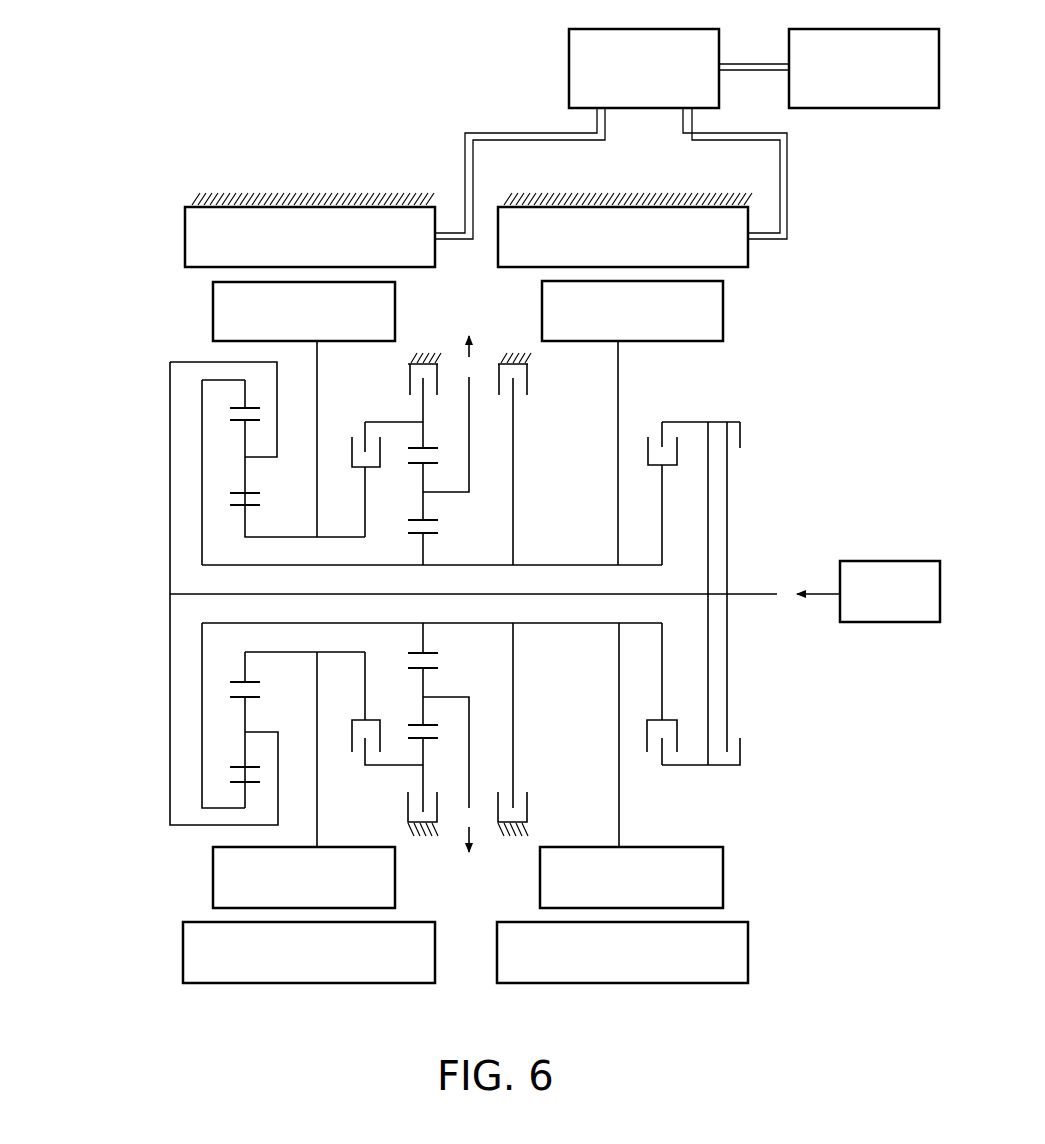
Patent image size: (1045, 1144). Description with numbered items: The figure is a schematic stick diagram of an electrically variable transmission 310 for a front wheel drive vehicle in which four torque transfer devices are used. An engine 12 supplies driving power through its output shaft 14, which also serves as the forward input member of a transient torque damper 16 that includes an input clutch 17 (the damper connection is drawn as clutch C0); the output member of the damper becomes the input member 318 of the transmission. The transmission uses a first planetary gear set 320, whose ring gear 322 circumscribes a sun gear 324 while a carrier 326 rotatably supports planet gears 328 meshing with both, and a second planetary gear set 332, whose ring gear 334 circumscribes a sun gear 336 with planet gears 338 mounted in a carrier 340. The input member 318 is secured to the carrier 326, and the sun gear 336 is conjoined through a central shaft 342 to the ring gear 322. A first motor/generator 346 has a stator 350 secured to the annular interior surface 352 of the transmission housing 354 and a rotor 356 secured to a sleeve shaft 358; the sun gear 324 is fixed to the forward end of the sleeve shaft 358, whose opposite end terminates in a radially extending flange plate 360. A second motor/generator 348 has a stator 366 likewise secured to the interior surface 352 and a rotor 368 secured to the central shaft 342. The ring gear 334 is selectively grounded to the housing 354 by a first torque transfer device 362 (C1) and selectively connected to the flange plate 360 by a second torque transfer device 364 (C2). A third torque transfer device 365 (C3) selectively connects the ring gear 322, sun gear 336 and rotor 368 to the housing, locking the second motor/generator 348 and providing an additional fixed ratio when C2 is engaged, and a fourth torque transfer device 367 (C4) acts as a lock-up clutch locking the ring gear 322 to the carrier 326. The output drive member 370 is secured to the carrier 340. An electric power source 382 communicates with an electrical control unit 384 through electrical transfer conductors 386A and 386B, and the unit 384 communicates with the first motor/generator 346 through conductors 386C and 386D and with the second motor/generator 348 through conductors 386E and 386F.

The engine 12 is at (885, 623).
The output shaft 14 is at (752, 592).
The transient torque damper 16 is at (755, 423).
The input clutch 17 is at (745, 770).
The electrically variable transmission 310 is at (105, 398).
The input member 318 is at (683, 594).
The first planetary gear set 320 is at (226, 393).
The ring gear 322 is at (253, 407).
The sun gear 324 is at (253, 508).
The carrier 326 is at (220, 468).
The planet gears 328 is at (255, 490).
The second planetary gear set 332 is at (408, 418).
The ring gear 334 is at (428, 448).
The sun gear 336 is at (428, 537).
The planet gears 338 is at (415, 463).
The carrier 340 is at (439, 500).
The central shaft 342 is at (228, 565).
The first motor/generator 346 is at (156, 263).
The second motor/generator 348 is at (765, 275).
The stator 350 is at (185, 219).
The interior surface 352 is at (213, 215).
The transmission housing 354 is at (422, 350).
The rotor 356 is at (212, 312).
The sleeve shaft 358 is at (290, 538).
The flange plate 360 is at (368, 512).
The first torque transfer device 362 is at (400, 372).
The second torque transfer device 364 is at (345, 436).
The third torque transfer device 365 is at (535, 407).
The stator 366 is at (498, 250).
The fourth torque transfer device 367 is at (646, 428).
The rotor 368 is at (725, 320).
The output drive member 370 is at (475, 845).
The electric power source 382 is at (878, 110).
The electrical control unit 384 is at (569, 62).
The electrical transfer conductor 386A is at (758, 62).
The electrical transfer conductor 386B is at (758, 72).
The electrical transfer conductor 386C is at (473, 132).
The electrical transfer conductor 386D is at (533, 133).
The electrical transfer conductor 386E is at (788, 167).
The electrical transfer conductor 386F is at (787, 207).
The clutch C0 is at (723, 754).
The first torque transfer device C1 is at (407, 787).
The second torque transfer device C2 is at (387, 724).
The third torque transfer device C3 is at (531, 729).
The fourth torque transfer device C4 is at (662, 714).